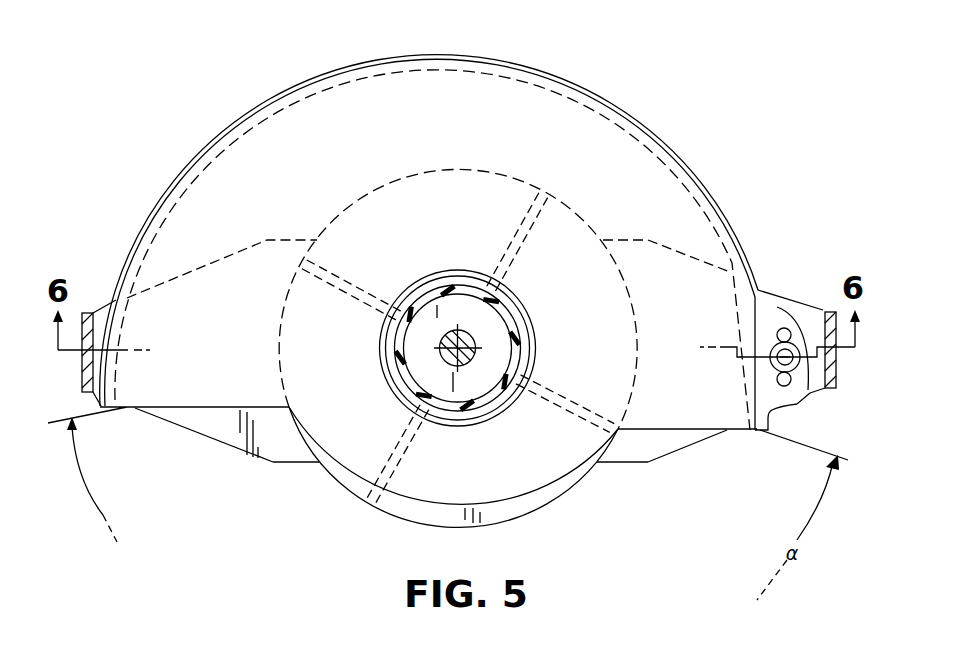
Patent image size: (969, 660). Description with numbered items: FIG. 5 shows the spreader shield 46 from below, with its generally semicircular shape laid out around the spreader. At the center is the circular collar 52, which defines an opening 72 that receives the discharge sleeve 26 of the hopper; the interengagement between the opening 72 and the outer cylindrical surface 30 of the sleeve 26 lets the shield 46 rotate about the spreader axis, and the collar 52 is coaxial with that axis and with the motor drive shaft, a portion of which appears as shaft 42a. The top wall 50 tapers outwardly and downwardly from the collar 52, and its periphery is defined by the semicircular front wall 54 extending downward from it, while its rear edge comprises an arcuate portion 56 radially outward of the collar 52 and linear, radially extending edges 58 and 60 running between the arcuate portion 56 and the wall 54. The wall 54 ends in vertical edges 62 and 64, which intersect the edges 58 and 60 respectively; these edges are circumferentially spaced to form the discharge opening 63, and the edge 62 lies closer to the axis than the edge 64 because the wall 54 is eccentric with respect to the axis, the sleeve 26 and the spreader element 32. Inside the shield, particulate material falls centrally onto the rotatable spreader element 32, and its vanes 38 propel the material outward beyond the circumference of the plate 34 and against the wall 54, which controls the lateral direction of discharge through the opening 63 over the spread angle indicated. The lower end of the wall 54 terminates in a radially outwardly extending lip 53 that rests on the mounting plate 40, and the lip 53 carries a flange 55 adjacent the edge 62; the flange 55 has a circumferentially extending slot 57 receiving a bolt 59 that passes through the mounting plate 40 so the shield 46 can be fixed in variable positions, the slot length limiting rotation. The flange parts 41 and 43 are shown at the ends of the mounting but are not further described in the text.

The discharge sleeve 26 is at (468, 266).
The outer cylindrical surface 30 is at (395, 368).
The spreader element 32 is at (572, 499).
The plate 34 is at (527, 507).
The vanes 38 is at (342, 275).
The mounting plate 40 is at (633, 455).
The right mounting flange 41 is at (836, 374).
The drive shaft 42a is at (453, 333).
The left mounting flange 43 is at (85, 372).
The spreader shield 46 is at (620, 82).
The top wall 50 is at (480, 113).
The circular collar 52 is at (528, 313).
The lip 53 is at (675, 152).
The front wall 54 is at (333, 82).
The flange 55 is at (785, 395).
The arcuate portion 56 is at (437, 508).
The slot 57 is at (810, 393).
The radially extending edge 58 is at (685, 432).
The bolt 59 is at (786, 350).
The radially extending edge 60 is at (222, 410).
The vertical edge 62 is at (753, 432).
The discharge opening 63 is at (317, 470).
The vertical edge 64 is at (110, 408).
The opening 72 is at (486, 398).